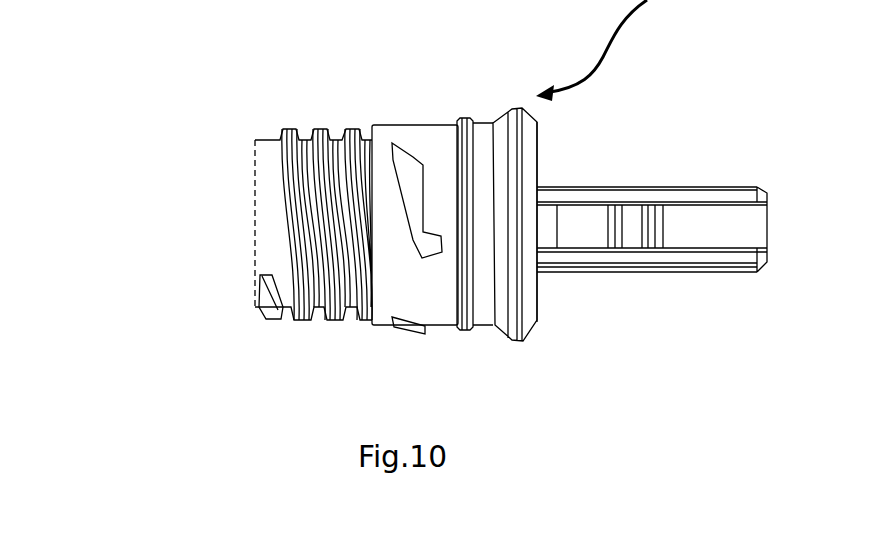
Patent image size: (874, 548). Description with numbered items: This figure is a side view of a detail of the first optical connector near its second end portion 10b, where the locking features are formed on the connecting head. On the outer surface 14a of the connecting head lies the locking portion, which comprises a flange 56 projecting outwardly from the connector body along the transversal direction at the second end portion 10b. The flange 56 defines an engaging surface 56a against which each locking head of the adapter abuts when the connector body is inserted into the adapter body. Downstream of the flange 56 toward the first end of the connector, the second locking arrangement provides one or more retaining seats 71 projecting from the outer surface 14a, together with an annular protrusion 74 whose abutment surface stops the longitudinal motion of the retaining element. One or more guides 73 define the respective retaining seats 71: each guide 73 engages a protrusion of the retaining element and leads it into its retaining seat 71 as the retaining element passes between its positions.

The second end portion 10b is at (540, 132).
The outer surface 14a is at (400, 125).
The flange 56 is at (525, 322).
The engaging surface 56a is at (509, 108).
The retaining seat 71 is at (417, 215).
The guide 73 is at (417, 170).
The annular protrusion 74 is at (458, 118).